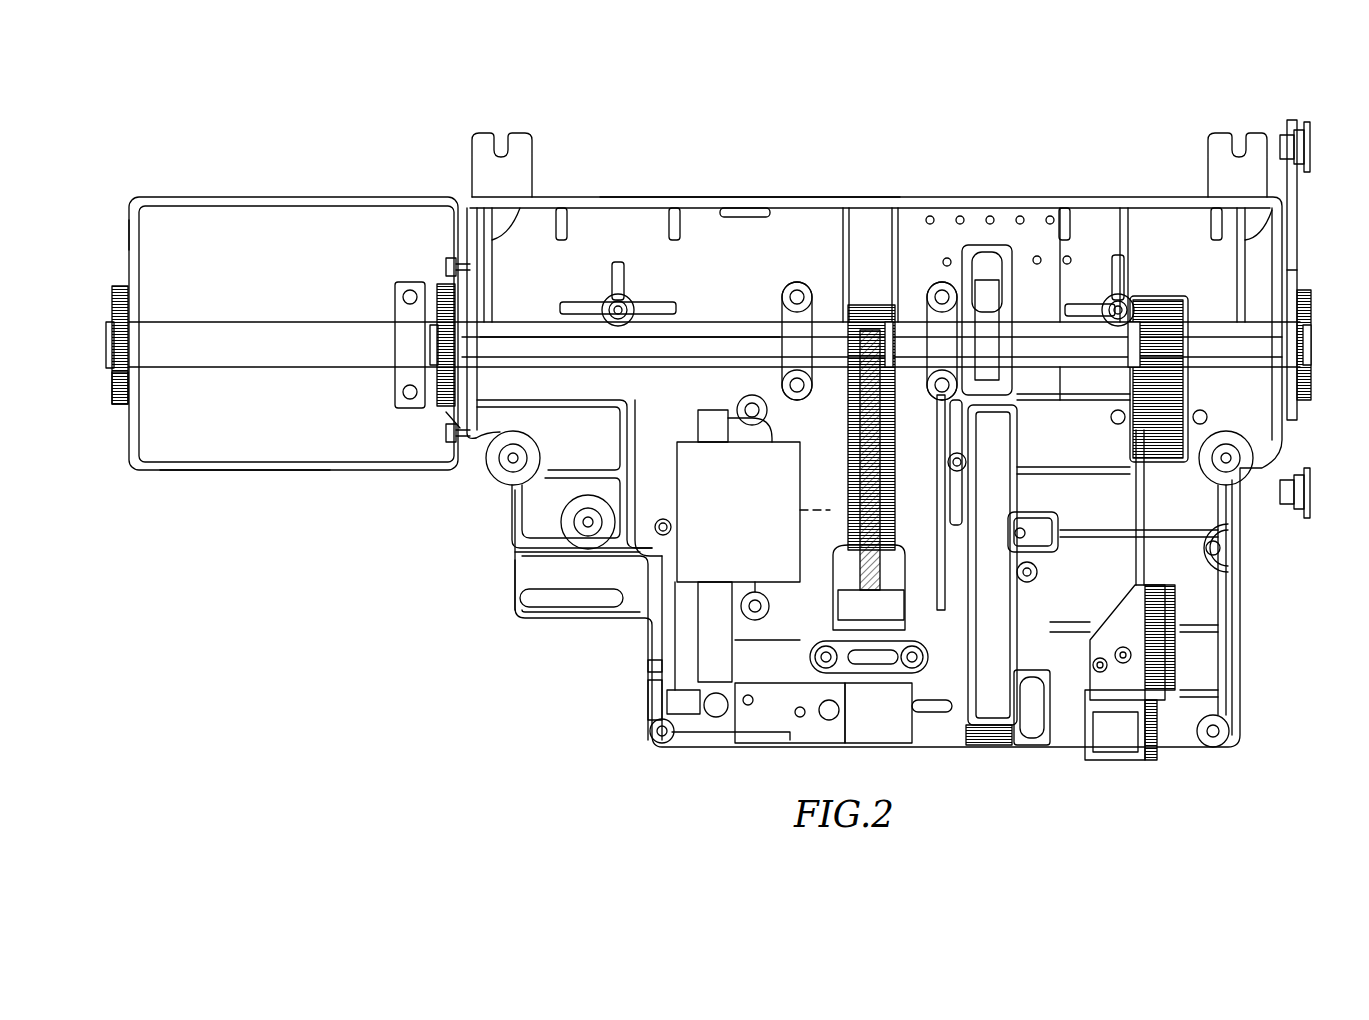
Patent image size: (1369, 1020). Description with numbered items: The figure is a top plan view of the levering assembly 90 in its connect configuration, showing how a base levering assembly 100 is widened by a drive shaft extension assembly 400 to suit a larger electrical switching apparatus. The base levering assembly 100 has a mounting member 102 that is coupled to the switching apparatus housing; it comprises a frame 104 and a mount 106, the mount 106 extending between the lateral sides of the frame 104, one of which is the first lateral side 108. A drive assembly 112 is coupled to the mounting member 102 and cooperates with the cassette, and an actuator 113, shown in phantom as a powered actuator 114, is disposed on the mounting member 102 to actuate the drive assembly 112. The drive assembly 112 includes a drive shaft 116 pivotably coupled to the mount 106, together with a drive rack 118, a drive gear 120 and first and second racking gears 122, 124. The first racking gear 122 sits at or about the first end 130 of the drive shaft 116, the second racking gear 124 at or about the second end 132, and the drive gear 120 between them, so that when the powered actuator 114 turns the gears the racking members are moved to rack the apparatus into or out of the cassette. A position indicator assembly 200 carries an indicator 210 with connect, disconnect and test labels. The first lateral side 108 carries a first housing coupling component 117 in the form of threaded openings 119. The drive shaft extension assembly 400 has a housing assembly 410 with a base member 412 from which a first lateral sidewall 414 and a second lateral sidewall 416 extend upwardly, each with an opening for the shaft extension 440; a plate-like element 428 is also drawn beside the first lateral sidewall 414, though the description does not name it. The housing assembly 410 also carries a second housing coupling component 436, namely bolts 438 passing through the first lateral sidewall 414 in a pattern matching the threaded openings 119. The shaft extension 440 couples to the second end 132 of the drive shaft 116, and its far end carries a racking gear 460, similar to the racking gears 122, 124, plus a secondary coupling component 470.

The levering assembly 90 is at (278, 150).
The base levering assembly 100 is at (856, 422).
The mounting member 102 is at (856, 440).
The frame 104 is at (1300, 232).
The mount 106 is at (706, 197).
The first lateral side 108 is at (1285, 205).
The drive assembly 112 is at (808, 622).
The actuator 113 is at (785, 472).
The powered actuator 114 is at (677, 452).
The drive shaft 116 is at (697, 347).
The first housing coupling component 117 is at (455, 525).
The drive rack 118 is at (904, 507).
The threaded openings 119 is at (492, 470).
The drive gear 120 is at (863, 290).
The first racking gear 122 is at (1312, 312).
The second racking gear 124 is at (442, 270).
The first end 130 is at (1312, 395).
The second end 132 is at (480, 300).
The position indicator assembly 200 is at (1128, 245).
The indicator 210 is at (1100, 765).
The drive shaft extension assembly 400 is at (259, 357).
The housing assembly 410 is at (225, 471).
The base member 412 is at (182, 226).
The first lateral sidewall 414 is at (452, 256).
The second lateral sidewall 416 is at (129, 235).
The mounting plate 428 is at (395, 300).
The second housing coupling component 436 is at (446, 433).
The bolts 438 is at (446, 425).
The shaft extension 440 is at (236, 330).
The racking gear 460 is at (112, 393).
The secondary coupling component 470 is at (112, 332).